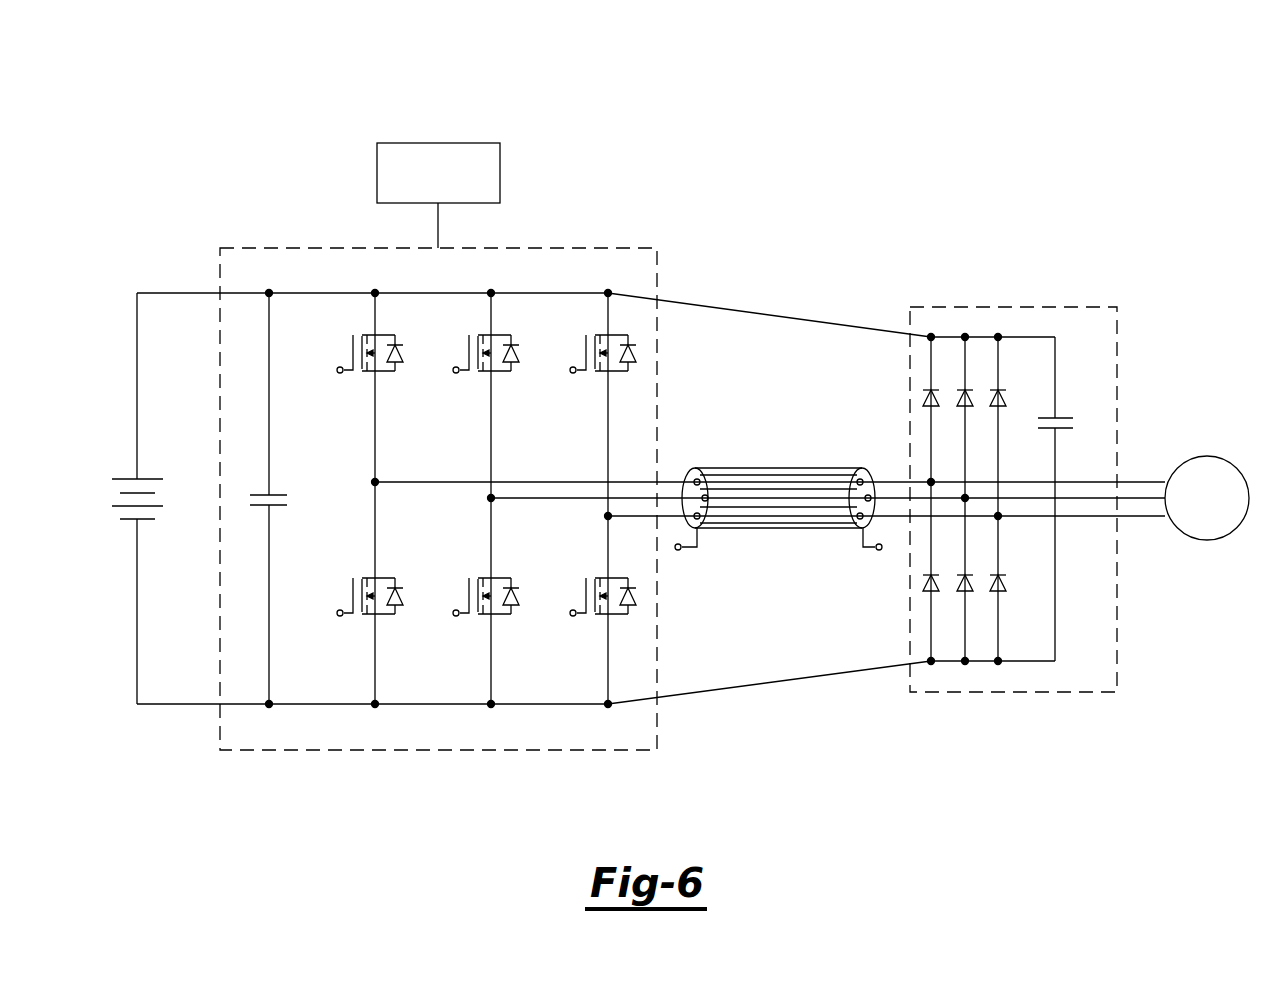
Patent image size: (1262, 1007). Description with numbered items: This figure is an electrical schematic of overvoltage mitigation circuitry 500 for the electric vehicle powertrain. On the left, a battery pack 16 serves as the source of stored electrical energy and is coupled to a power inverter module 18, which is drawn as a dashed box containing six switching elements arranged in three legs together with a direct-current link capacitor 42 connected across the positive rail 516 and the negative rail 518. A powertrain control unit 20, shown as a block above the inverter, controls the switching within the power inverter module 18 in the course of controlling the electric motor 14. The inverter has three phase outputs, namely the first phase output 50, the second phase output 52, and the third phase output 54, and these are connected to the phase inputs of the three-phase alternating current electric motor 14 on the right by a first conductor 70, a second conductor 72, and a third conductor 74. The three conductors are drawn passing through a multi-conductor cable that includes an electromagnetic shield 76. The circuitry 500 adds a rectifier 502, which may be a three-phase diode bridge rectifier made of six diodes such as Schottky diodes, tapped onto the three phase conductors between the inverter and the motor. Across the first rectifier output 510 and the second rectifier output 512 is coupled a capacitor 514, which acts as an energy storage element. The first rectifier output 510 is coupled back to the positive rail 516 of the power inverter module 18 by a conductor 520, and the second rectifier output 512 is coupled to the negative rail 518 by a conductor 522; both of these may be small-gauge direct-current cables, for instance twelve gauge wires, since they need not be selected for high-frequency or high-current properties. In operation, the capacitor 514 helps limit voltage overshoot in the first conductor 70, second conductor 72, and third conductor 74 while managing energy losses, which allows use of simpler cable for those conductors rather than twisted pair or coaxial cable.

The circuitry 500 is at (177, 111).
The power inverter module 18 is at (262, 248).
The powertrain control unit 20 is at (438, 143).
The battery pack 16 is at (128, 479).
The direct-current link capacitor 42 is at (262, 495).
The positive rail 516 is at (560, 293).
The negative rail 518 is at (558, 705).
The second phase output 52 is at (590, 498).
The third phase output 54 is at (627, 517).
The first phase output 50 is at (777, 508).
The first conductor 70 is at (728, 468).
The second conductor 72 is at (780, 495).
The third conductor 74 is at (778, 528).
The electromagnetic shield 76 is at (734, 528).
The conductor 520 is at (778, 312).
The conductor 522 is at (777, 682).
The rectifier 502 is at (950, 323).
The first rectifier output 510 is at (1038, 452).
The capacitor 514 is at (1045, 417).
The second rectifier output 512 is at (1038, 661).
The electric motor 14 is at (1205, 456).